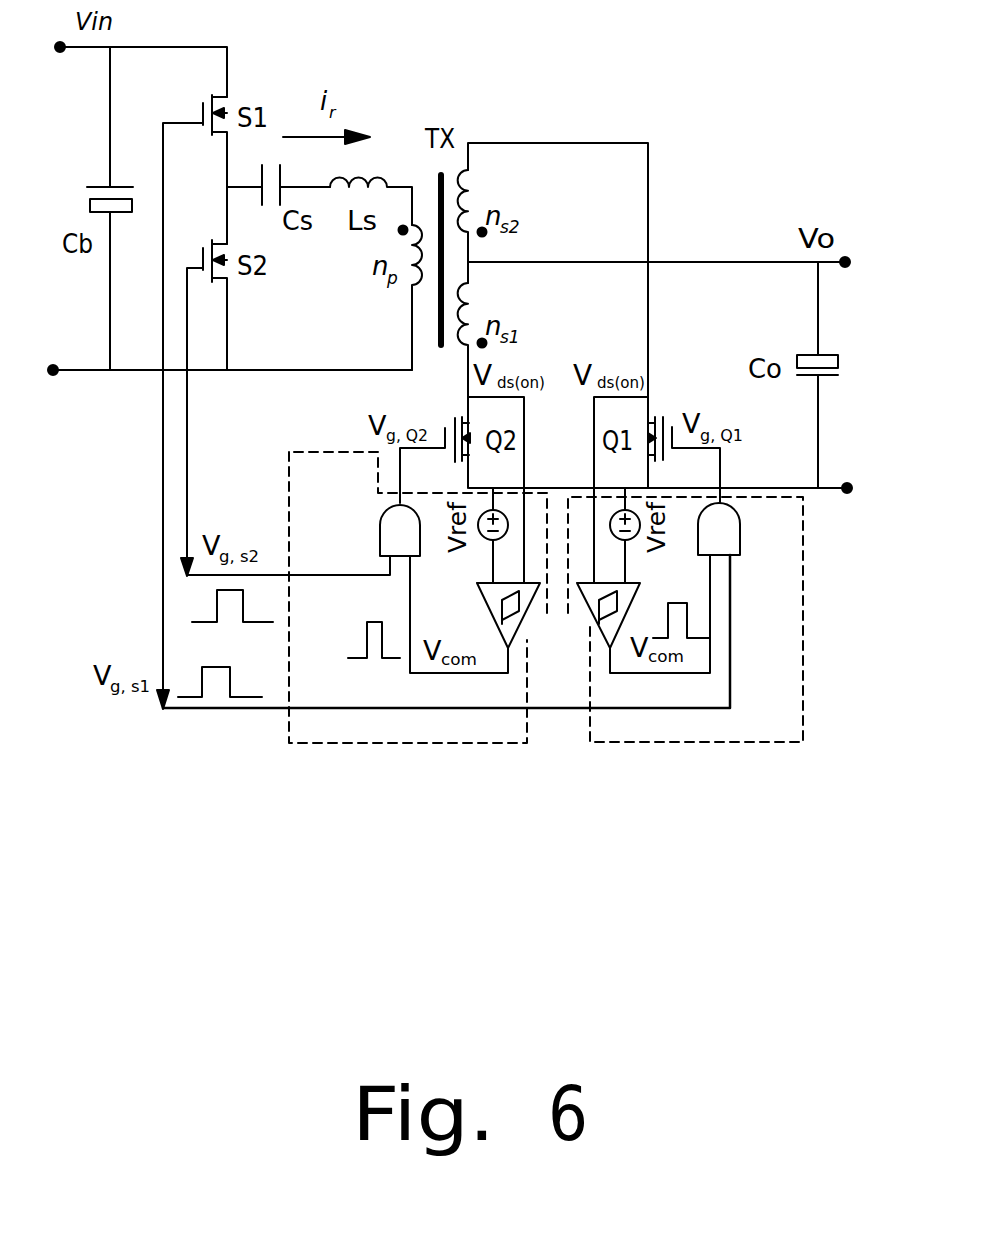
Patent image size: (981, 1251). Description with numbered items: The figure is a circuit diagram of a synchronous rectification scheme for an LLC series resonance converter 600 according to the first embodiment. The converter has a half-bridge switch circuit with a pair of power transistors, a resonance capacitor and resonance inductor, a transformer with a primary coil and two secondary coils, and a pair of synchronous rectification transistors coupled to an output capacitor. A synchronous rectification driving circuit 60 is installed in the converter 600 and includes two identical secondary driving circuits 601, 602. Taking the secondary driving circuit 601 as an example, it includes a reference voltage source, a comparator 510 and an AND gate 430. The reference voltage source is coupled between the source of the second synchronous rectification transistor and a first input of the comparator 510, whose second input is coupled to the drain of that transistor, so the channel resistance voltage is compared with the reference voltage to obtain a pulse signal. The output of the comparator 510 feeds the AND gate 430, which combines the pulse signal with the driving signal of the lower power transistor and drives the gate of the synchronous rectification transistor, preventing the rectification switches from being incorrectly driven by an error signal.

The synchronous rectification driving circuit 60 is at (546, 706).
The LLC series resonance converter 600 is at (584, 706).
The secondary driving circuit 601 is at (433, 745).
The secondary driving circuit 602 is at (690, 745).
The AND gate 430 is at (381, 518).
The comparator 510 is at (595, 622).